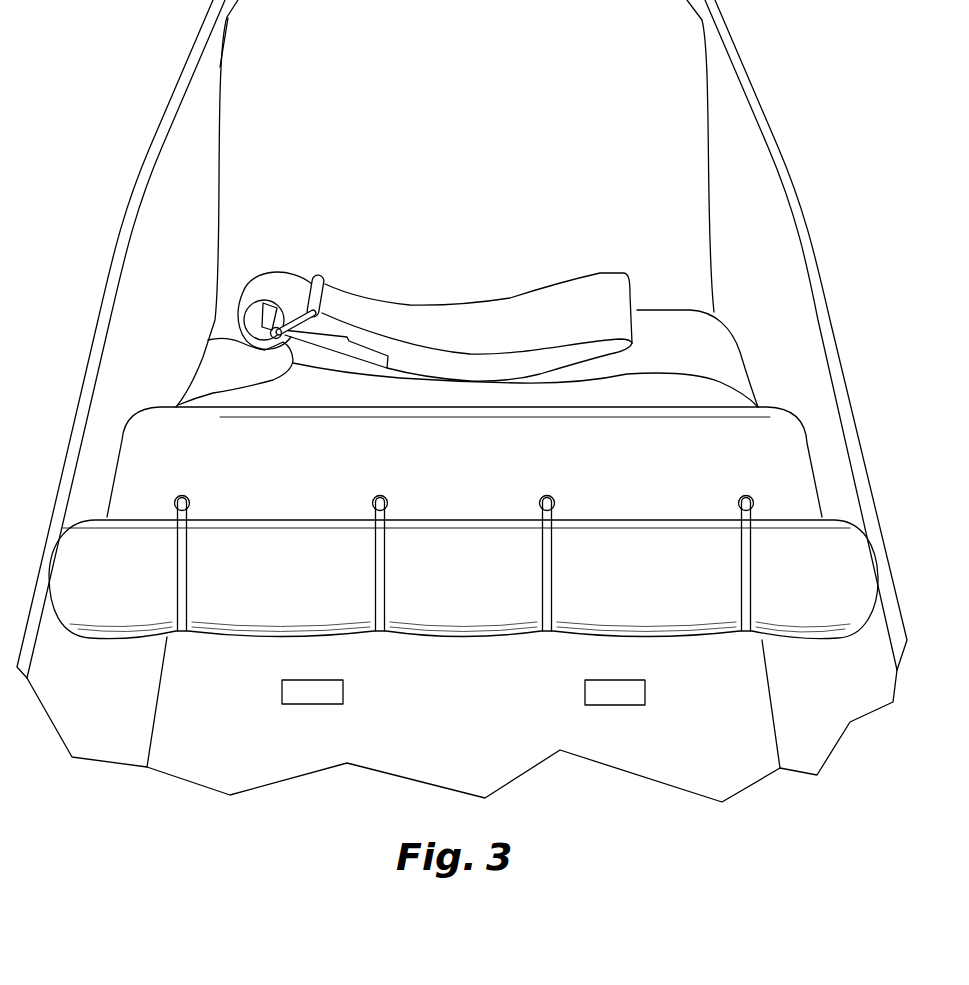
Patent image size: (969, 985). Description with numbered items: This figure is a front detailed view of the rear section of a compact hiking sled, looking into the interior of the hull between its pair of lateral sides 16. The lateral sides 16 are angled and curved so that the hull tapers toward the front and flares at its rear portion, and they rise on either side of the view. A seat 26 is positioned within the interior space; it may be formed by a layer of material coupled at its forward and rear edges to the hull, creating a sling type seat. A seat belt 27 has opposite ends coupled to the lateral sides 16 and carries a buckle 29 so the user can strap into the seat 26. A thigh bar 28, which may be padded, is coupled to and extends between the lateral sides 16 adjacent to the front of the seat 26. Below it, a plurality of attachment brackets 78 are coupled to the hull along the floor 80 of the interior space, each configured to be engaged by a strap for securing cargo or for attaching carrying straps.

The lateral sides 16 is at (168, 173).
The seat 26 is at (665, 70).
The seat belt 27 is at (570, 290).
The thigh bar 28 is at (478, 605).
The buckle 29 is at (321, 281).
The attachment brackets 78 is at (308, 688).
The floor 80 is at (451, 735).